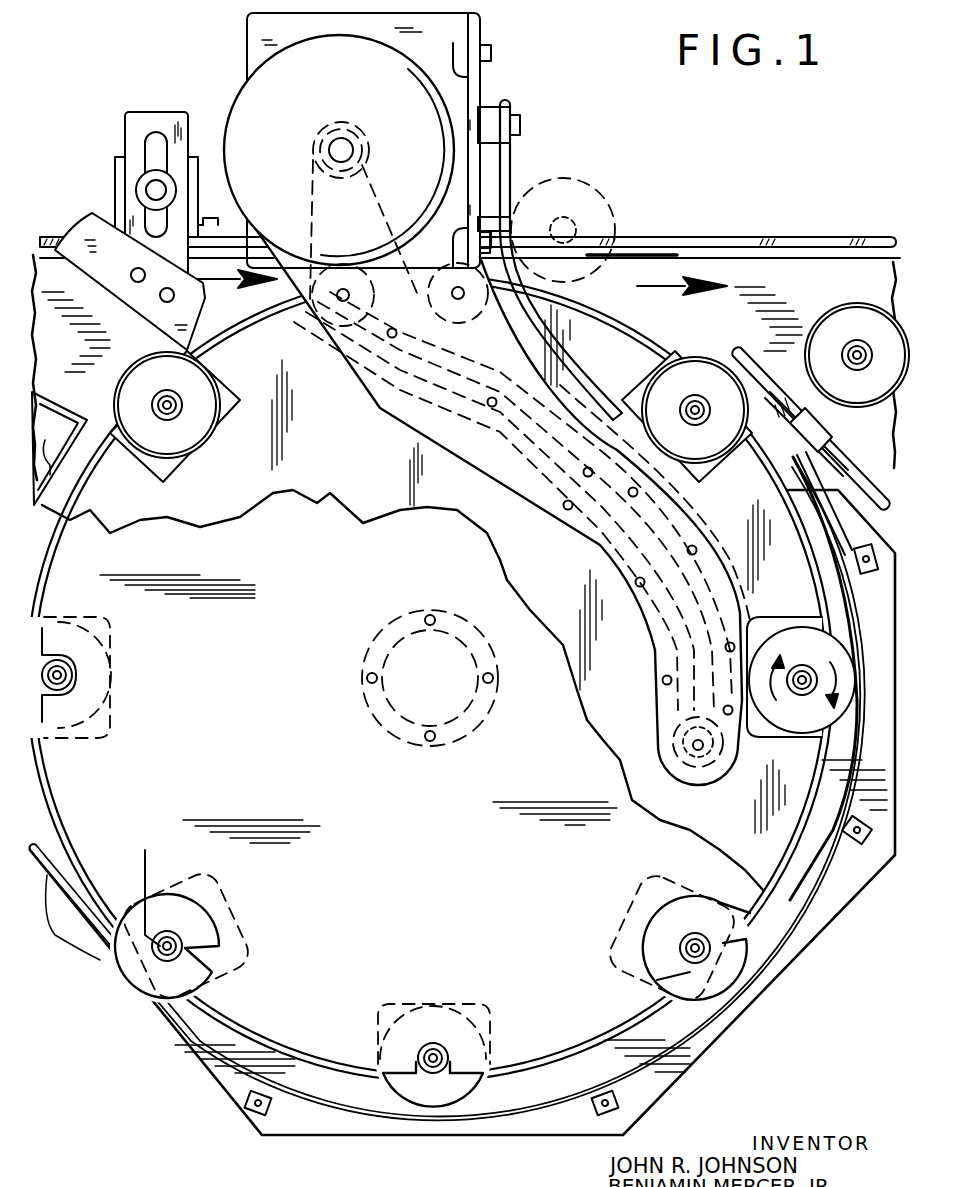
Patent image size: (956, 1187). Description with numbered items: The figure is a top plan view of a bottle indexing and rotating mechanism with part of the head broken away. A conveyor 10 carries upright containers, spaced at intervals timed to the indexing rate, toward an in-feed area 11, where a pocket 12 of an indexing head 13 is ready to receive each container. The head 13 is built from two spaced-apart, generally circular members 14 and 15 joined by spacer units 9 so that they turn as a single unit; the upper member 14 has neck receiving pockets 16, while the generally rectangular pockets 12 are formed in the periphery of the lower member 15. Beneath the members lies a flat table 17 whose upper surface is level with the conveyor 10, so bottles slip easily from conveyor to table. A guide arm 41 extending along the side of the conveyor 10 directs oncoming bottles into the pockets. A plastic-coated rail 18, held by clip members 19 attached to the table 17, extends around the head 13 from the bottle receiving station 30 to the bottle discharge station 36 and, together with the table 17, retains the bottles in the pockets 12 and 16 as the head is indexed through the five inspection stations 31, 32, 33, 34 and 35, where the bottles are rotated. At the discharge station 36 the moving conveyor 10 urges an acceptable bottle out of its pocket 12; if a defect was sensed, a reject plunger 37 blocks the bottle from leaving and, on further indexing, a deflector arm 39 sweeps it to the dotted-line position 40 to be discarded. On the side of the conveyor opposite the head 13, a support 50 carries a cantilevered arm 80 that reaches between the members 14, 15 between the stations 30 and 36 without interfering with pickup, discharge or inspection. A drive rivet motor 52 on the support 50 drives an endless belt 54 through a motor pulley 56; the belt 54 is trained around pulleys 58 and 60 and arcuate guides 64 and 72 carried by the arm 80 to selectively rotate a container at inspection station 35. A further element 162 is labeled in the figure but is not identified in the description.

The spacer units 9 is at (433, 613).
The conveyor 10 is at (727, 203).
The in-feed area 11 is at (126, 328).
The pockets 12 is at (234, 385).
The indexing head 13 is at (280, 1152).
The upper circular member 14 is at (318, 508).
The lower circular member 15 is at (790, 903).
The neck receiving pockets 16 is at (45, 702).
The table 17 is at (753, 1008).
The rail 18 is at (42, 472).
The clip members 19 is at (866, 572).
The bottle receiving station 30 is at (235, 469).
The inspection station 31 is at (148, 691).
The inspection station 32 is at (233, 905).
The inspection station 33 is at (448, 991).
The inspection station 34 is at (652, 913).
The inspection station 35 is at (773, 767).
The bottle discharge station 36 is at (749, 503).
The reject plunger 37 is at (826, 422).
The deflector arm 39 is at (512, 152).
The dotted line position 40 is at (560, 180).
The guide arm 41 is at (73, 232).
The support 50 is at (482, 32).
The drive rivet motor 52 is at (248, 88).
The endless belt 54 is at (300, 180).
The motor pulley 56 is at (370, 190).
The pulley 58 is at (320, 334).
The pulley 60 is at (668, 722).
The arcuate guide 64 is at (680, 515).
The arcuate guide 72 is at (578, 505).
The cantilevered arm 80 is at (398, 438).
The guide roller 162 is at (420, 285).